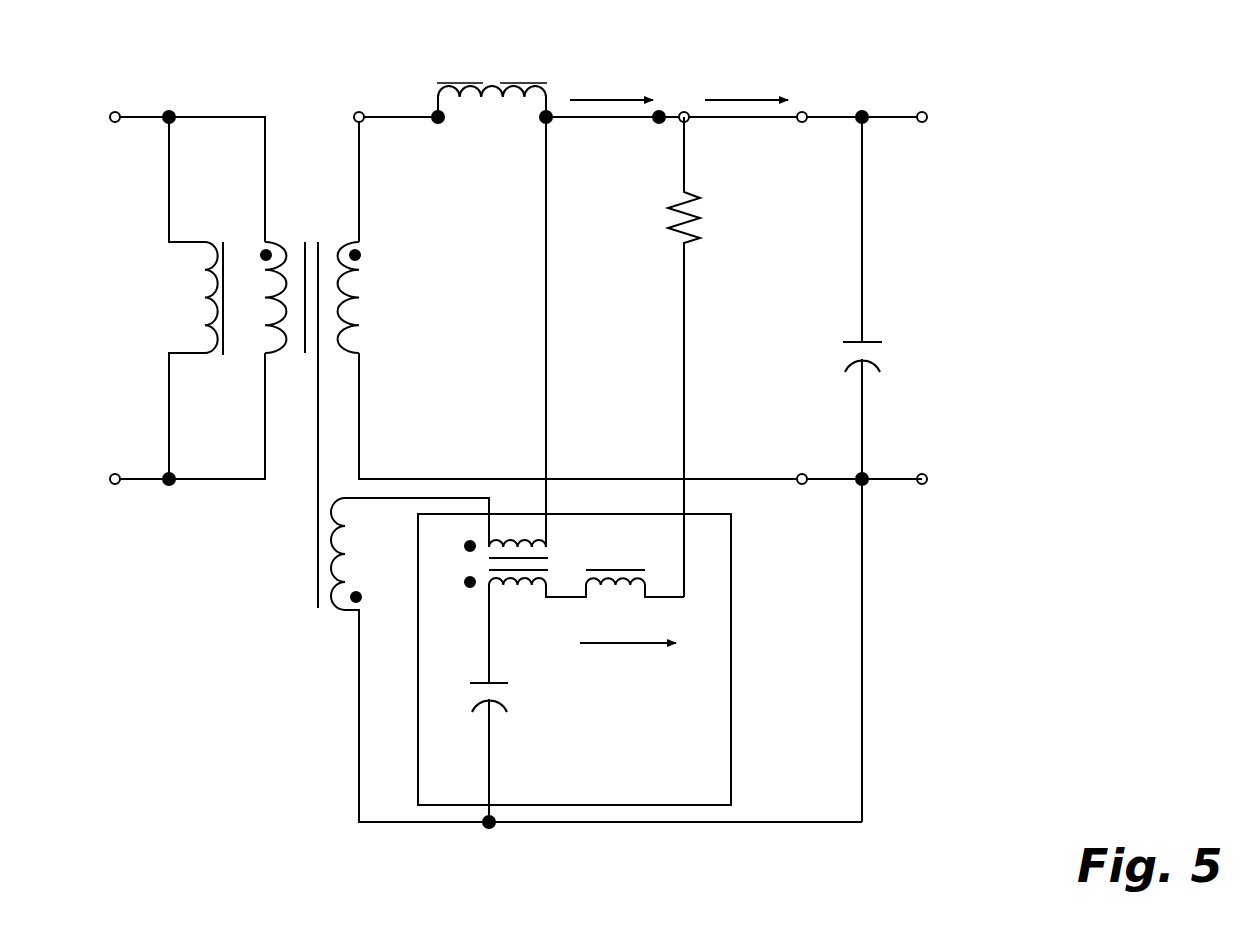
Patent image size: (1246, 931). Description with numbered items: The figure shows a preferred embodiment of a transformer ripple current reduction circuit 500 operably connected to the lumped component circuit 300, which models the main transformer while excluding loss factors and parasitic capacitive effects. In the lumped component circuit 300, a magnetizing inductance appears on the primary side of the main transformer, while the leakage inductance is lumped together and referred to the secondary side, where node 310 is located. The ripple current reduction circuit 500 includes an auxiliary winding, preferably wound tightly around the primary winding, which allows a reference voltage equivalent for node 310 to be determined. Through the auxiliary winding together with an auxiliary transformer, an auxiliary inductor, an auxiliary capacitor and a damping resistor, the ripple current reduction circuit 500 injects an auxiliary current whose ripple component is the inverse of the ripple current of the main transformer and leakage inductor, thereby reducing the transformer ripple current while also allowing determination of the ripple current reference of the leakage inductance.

The lumped component circuit 300 is at (263, 94).
The node 310 is at (356, 112).
The transformer ripple current reduction circuit 500 is at (1040, 625).